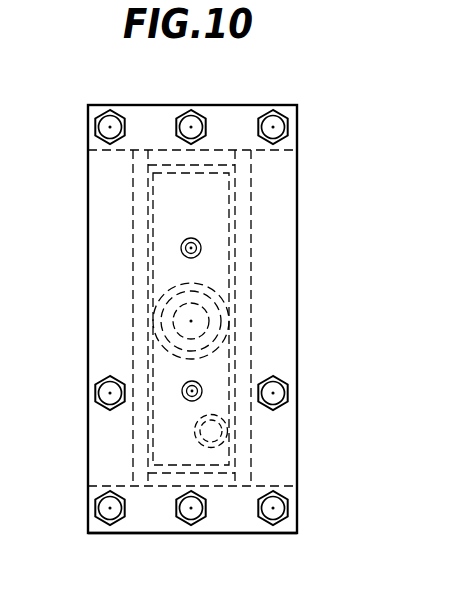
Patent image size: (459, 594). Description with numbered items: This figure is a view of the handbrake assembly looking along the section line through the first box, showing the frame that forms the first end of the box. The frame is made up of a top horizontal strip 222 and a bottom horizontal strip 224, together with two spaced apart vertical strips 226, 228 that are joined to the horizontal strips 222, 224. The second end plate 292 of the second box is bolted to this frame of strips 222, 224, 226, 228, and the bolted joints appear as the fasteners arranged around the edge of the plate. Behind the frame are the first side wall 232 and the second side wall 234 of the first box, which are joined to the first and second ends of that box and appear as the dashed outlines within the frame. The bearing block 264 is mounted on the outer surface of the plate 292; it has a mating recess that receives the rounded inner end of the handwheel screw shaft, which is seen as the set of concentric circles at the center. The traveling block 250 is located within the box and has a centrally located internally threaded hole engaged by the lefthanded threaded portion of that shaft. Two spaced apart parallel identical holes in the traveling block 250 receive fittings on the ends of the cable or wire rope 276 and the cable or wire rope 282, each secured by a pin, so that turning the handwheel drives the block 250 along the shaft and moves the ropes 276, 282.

The top horizontal strip 222 is at (273, 435).
The bottom horizontal strip 224 is at (112, 358).
The vertical strip 226 is at (232, 126).
The vertical strip 228 is at (156, 509).
The first side wall 232 is at (163, 153).
The second side wall 234 is at (218, 480).
The traveling block 250 is at (218, 212).
The bearing 264 is at (218, 343).
The wire rope 276 is at (189, 242).
The wire rope 282 is at (185, 397).
The second end plate 292 is at (109, 307).